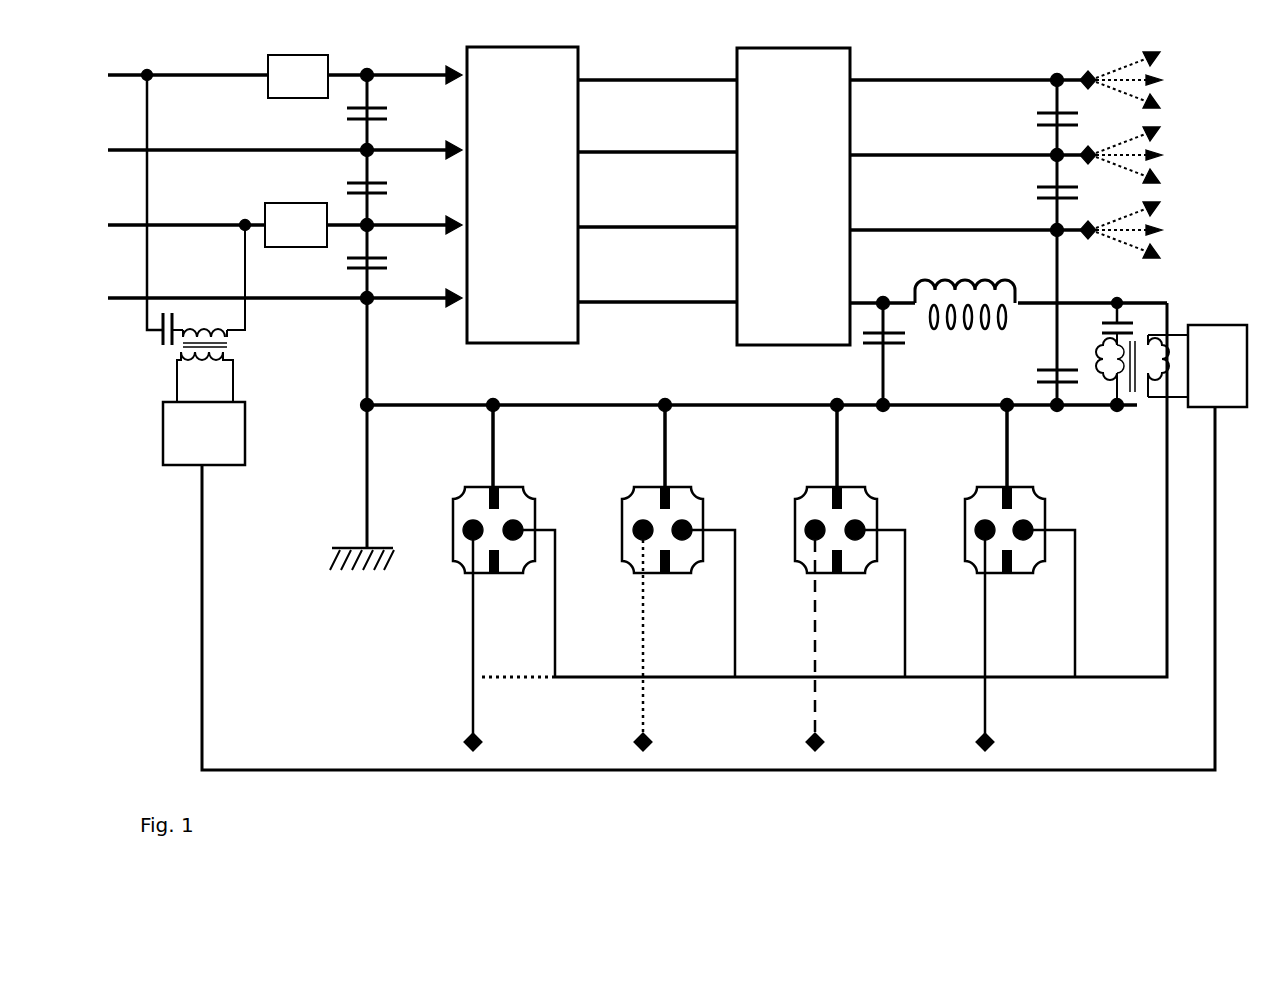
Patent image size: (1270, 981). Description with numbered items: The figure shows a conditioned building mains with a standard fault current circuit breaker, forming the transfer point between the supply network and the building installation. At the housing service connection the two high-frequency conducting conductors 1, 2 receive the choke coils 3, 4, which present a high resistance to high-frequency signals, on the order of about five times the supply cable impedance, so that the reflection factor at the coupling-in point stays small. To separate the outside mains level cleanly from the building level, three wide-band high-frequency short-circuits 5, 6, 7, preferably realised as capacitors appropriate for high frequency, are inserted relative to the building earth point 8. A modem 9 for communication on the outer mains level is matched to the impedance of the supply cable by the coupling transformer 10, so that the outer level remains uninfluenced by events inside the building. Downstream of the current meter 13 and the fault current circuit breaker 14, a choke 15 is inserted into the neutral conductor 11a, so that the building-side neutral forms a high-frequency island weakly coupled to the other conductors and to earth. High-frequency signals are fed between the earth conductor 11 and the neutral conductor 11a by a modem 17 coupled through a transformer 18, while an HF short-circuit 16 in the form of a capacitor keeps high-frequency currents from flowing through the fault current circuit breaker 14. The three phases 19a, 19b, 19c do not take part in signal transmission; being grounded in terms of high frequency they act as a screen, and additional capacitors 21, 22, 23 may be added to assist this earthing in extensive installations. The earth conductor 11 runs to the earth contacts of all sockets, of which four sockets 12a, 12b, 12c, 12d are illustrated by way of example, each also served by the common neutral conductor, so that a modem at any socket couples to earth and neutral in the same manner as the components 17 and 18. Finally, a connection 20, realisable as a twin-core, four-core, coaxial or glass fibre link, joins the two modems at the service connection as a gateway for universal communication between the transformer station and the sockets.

The high-frequency conducting conductor 1 is at (170, 72).
The high-frequency conducting conductor 2 is at (160, 222).
The choke coil 3 is at (298, 55).
The choke coil 4 is at (295, 203).
The wide-band high-frequency short-circuit 5 is at (390, 115).
The wide-band high-frequency short-circuit 6 is at (390, 190).
The wide-band high-frequency short-circuit 7 is at (390, 264).
The building earth point 8 is at (367, 508).
The modem 9 is at (235, 455).
The coupling transformer 10 is at (228, 342).
The earth conductor 11 is at (570, 405).
The neutral conductor 11a is at (1162, 592).
The socket 12a is at (515, 510).
The socket 12b is at (683, 510).
The socket 12c is at (857, 512).
The socket 12d is at (1025, 512).
The current meter 13 is at (515, 57).
The fault current circuit breaker 14 is at (780, 57).
The choke 15 is at (957, 280).
The HF short-circuit 16 is at (910, 340).
The modem 17 is at (1215, 335).
The transformer 18 is at (1136, 340).
The phase 19a is at (880, 80).
The phase 19b is at (880, 155).
The phase 19c is at (880, 230).
The connection 20 is at (292, 770).
The capacitor 21 is at (1035, 117).
The capacitor 22 is at (1035, 192).
The capacitor 23 is at (1035, 375).